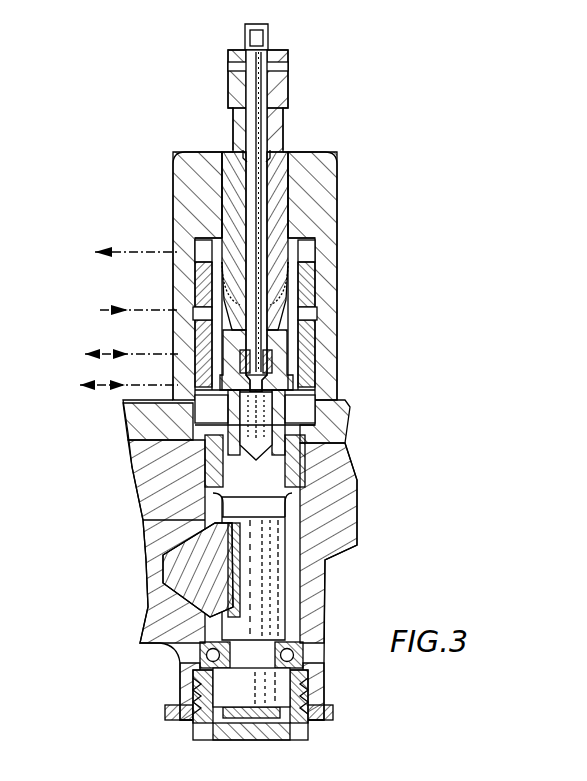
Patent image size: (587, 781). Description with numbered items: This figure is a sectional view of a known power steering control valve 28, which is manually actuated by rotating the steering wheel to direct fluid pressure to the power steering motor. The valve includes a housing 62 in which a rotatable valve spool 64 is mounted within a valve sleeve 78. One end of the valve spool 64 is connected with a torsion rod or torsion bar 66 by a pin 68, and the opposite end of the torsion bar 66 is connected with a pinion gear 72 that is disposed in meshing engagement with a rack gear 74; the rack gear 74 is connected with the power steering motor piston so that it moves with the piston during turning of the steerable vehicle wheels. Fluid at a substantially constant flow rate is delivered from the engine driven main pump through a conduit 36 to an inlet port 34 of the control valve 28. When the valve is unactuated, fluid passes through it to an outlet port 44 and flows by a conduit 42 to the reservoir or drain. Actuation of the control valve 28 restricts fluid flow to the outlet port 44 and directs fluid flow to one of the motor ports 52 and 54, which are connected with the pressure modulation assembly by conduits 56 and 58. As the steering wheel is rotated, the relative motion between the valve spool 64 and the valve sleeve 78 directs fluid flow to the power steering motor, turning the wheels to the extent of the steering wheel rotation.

The power steering control valve 28 is at (172, 108).
The inlet port 34 is at (176, 300).
The conduit 36 is at (96, 318).
The conduit 42 is at (82, 247).
The outlet port 44 is at (178, 240).
The motor port 52 is at (195, 378).
The motor port 54 is at (200, 413).
The conduit 56 is at (132, 346).
The conduit 58 is at (106, 402).
The housing 62 is at (320, 185).
The valve spool 64 is at (215, 186).
The torsion bar 66 is at (258, 142).
The pin 68 is at (288, 58).
The pinion gear 72 is at (268, 567).
The rack gear 74 is at (195, 568).
The valve sleeve 78 is at (315, 296).